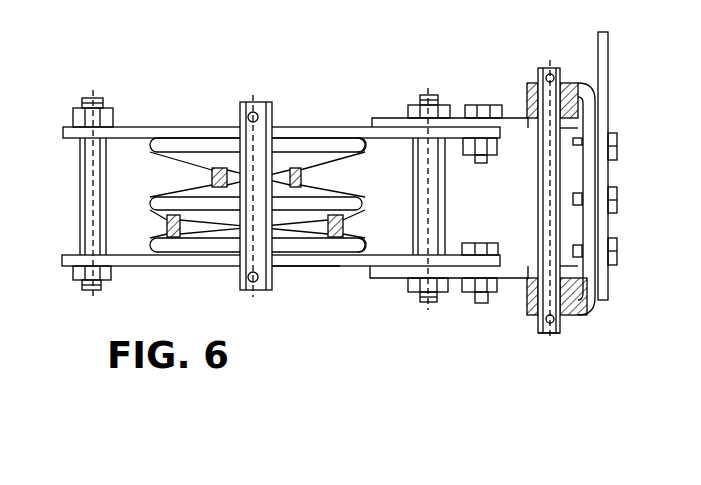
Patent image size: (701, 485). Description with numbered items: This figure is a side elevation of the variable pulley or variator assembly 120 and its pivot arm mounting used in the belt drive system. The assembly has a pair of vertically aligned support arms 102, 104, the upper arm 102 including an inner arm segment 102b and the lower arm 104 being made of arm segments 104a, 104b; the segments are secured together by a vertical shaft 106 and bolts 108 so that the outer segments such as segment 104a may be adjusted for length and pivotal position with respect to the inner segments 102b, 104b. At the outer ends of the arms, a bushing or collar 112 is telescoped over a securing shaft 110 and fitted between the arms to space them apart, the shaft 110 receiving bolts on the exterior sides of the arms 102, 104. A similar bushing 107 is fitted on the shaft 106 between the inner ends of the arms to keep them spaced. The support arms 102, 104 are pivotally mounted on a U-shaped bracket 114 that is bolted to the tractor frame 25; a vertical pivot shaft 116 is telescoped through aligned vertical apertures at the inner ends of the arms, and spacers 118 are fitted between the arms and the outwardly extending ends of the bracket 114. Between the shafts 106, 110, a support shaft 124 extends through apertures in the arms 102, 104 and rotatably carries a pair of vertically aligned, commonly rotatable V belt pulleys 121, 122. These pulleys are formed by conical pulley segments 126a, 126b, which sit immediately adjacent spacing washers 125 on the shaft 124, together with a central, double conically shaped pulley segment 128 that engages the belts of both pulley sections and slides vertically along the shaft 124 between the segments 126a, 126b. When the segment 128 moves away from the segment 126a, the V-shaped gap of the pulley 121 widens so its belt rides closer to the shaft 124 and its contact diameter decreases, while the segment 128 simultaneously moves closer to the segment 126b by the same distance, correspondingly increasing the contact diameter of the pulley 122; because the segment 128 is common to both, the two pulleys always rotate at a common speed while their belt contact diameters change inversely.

The tractor frame 25 is at (608, 50).
The support arm 102 is at (140, 127).
The arm segment 102b is at (513, 117).
The support arm 104 is at (133, 266).
The arm segment 104a is at (303, 267).
The arm segment 104b is at (515, 270).
The vertical shaft 106 is at (429, 98).
The bushing 107 is at (432, 205).
The bolts 108 is at (483, 103).
The securing shaft 110 is at (98, 97).
The bushing or collar 112 is at (82, 187).
The U-shaped bracket 114 is at (592, 120).
The vertical pivot shaft 116 is at (551, 75).
The spacers 118 is at (515, 268).
The variable pulley or variator assembly 120 is at (263, 102).
The V belt pulley 121 is at (186, 171).
The V belt pulley 122 is at (153, 223).
The support shaft 124 is at (276, 116).
The spacing washers 125 is at (214, 138).
The conical pulley segment 126a is at (370, 137).
The conical pulley segment 126b is at (367, 256).
The double conically shaped pulley segment 128 is at (333, 200).